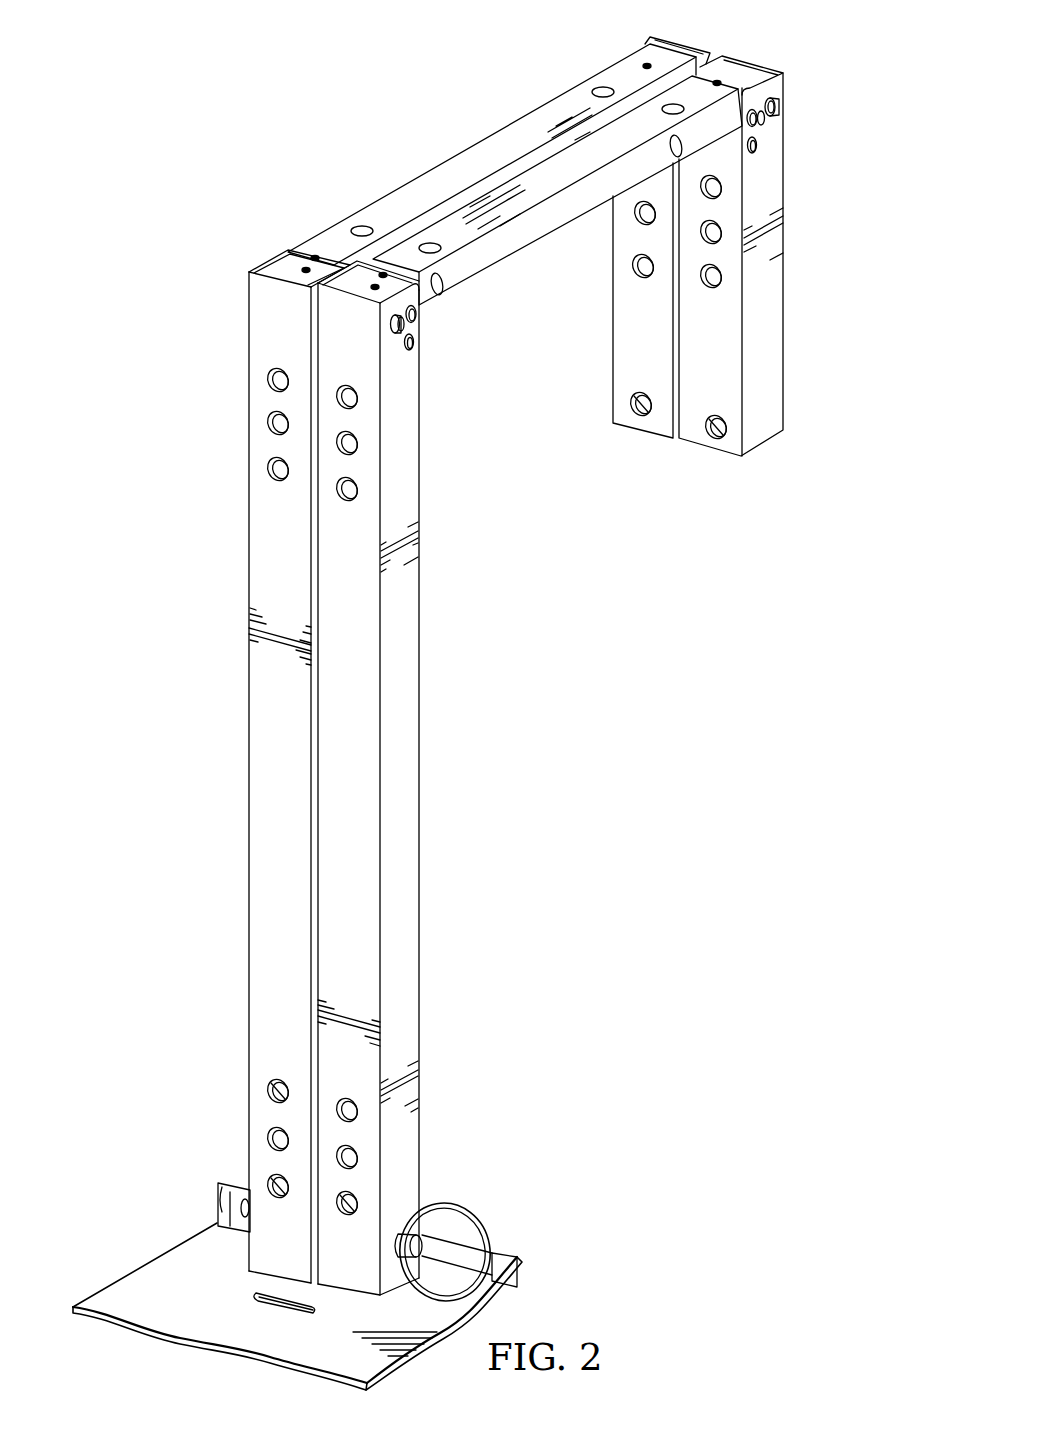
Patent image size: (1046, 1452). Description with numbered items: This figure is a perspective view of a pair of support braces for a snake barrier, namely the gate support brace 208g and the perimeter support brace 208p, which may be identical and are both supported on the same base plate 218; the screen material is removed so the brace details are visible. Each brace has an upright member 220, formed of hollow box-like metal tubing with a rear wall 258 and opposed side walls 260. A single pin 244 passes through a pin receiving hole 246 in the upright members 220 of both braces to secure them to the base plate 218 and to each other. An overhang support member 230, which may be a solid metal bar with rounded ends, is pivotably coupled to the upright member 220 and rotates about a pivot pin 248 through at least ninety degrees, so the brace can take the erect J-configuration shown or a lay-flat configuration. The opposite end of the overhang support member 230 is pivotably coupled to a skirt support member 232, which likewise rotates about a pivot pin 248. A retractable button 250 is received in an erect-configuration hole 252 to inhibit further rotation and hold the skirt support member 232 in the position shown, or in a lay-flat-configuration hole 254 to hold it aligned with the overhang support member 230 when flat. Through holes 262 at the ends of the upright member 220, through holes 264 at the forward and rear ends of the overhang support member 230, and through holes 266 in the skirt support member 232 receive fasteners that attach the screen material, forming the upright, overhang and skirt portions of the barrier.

The perimeter support brace 208p is at (242, 660).
The gate support brace 208g is at (428, 746).
The base plate 218 is at (131, 1276).
The upright member 220 is at (249, 906).
The overhang support member 230 is at (510, 134).
The skirt support member 232 is at (612, 358).
The pin 244 is at (441, 1240).
The pin receiving hole 246 is at (401, 1238).
The pivot pin 248 is at (752, 110).
The retractable button 250 is at (779, 107).
The erect-configuration hole 252 is at (776, 116).
The lay-flat-configuration hole 254 is at (760, 148).
The rear wall 258 is at (257, 968).
The side walls 260 is at (409, 940).
The through holes 262 is at (268, 1092).
The through holes 264 is at (602, 87).
The through holes 266 is at (642, 279).